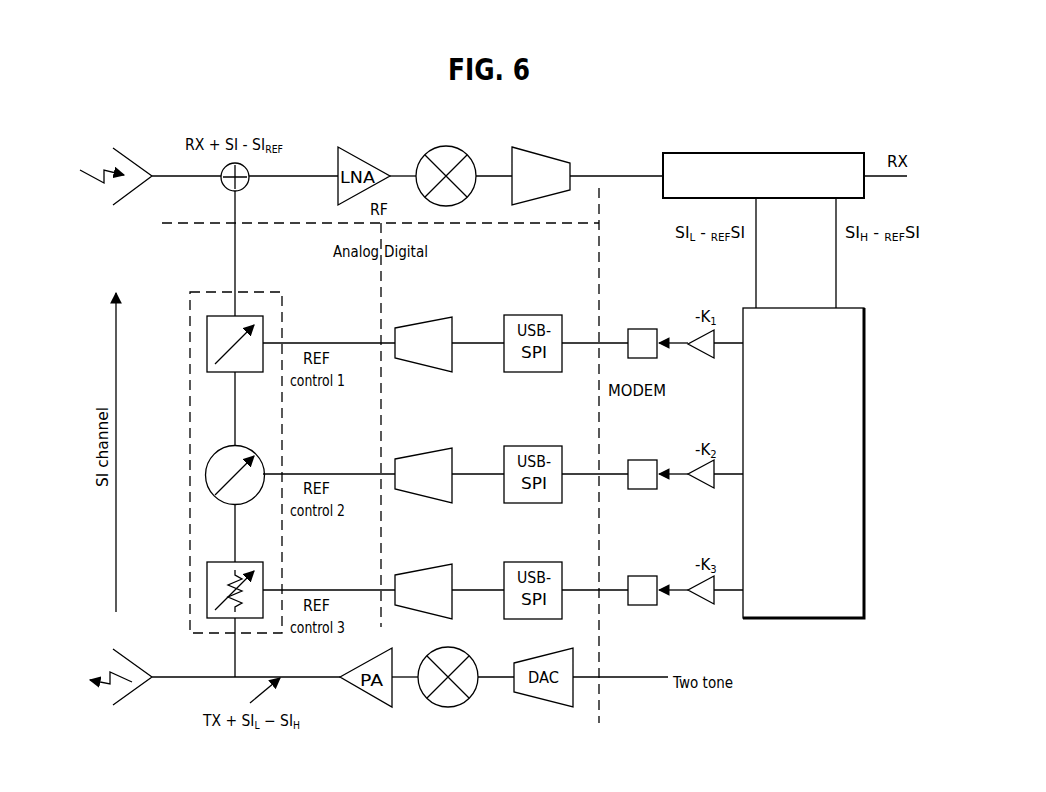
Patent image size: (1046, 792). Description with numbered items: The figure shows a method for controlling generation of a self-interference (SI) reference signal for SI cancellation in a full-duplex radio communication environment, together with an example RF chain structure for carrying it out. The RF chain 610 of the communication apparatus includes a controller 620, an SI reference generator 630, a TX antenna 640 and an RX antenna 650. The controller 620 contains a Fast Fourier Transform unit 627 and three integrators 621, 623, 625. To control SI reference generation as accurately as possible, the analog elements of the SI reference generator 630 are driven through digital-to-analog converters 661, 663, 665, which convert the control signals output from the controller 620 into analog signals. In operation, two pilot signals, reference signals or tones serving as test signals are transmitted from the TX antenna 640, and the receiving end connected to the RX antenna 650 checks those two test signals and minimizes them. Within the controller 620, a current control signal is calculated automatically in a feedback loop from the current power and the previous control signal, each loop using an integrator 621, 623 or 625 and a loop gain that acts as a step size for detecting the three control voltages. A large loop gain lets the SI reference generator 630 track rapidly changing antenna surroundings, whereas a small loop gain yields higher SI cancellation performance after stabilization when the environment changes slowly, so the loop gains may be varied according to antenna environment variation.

The RF chain 610 is at (542, 154).
The controller 620 is at (864, 462).
The integrator 621 is at (641, 329).
The integrator 623 is at (641, 460).
The integrator 625 is at (641, 576).
The Fast Fourier Transform (FFT) unit 627 is at (762, 153).
The SI reference generator 630 is at (212, 292).
The TX antenna 640 is at (137, 690).
The RX antenna 650 is at (135, 192).
The digital-to-analog converter (DAC) 661 is at (423, 322).
The digital-to-analog converter (DAC) 663 is at (423, 453).
The digital-to-analog converter (DAC) 665 is at (423, 569).